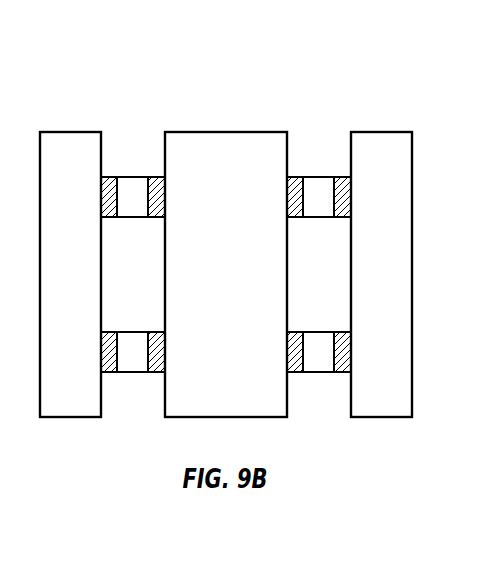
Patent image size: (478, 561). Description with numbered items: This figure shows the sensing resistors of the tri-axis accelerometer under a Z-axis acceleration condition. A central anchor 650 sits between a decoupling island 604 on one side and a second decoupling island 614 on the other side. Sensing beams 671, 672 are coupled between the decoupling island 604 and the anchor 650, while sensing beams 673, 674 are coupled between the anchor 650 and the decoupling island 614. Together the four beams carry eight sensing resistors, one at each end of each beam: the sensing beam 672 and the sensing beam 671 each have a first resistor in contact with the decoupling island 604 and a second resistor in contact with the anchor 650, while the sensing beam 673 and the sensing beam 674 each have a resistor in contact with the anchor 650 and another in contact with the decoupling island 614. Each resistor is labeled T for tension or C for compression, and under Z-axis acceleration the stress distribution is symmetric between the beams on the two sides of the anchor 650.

The decoupling island 604 is at (67, 140).
The decoupling island 614 is at (380, 130).
The anchor 650 is at (197, 230).
The sensing beam 671 is at (132, 372).
The sensing beam 672 is at (132, 176).
The sensing beam 673 is at (313, 176).
The sensing beam 674 is at (320, 372).